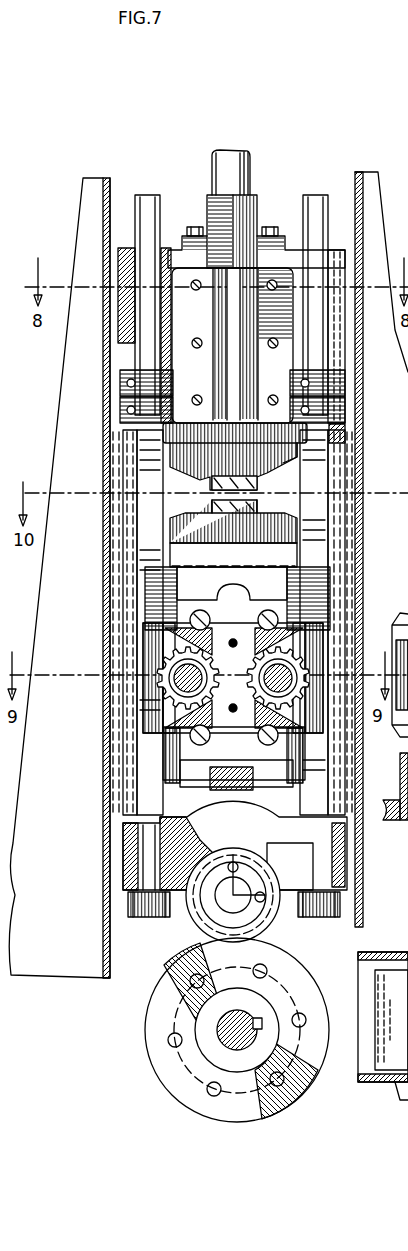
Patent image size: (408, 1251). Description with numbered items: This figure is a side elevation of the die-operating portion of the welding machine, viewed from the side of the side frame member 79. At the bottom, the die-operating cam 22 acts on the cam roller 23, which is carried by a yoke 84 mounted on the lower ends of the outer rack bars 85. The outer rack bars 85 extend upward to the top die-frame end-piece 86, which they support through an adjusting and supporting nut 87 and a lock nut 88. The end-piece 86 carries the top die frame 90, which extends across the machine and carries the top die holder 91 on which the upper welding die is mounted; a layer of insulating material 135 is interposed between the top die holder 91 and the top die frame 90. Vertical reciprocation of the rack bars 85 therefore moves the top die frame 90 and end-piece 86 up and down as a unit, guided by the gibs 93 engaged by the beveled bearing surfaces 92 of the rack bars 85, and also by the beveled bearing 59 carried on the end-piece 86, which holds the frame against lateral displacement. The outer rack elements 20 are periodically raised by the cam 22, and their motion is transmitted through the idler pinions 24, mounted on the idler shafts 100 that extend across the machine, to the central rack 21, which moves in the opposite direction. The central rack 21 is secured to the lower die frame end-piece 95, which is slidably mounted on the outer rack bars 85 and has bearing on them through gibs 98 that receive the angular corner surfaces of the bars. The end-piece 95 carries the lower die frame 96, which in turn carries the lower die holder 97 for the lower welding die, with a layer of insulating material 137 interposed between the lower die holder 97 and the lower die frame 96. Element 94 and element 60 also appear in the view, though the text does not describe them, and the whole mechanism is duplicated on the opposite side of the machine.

The side frame member 79 is at (381, 233).
The top die-frame end-piece 86 is at (293, 253).
The beveled bearing 59 is at (217, 353).
The adjusting and supporting nut 87 is at (118, 378).
The lock nut 88 is at (118, 407).
The top die frame 90 is at (183, 432).
The guide strip 94 is at (362, 390).
The top die holder 91 is at (182, 453).
The outer rack bar 85 is at (317, 490).
The gib 93 is at (348, 460).
The lower die holder 97 is at (182, 533).
The lower die frame 96 is at (177, 557).
The layer of insulating material 135 is at (333, 428).
The beveled bearing surface 92 is at (300, 448).
The layer of insulating material 137 is at (287, 543).
The gib 98 is at (293, 577).
The outer rack element 20 is at (320, 625).
The idler pinion 24 is at (310, 670).
The idler shaft 100 is at (313, 695).
The central rack 21 is at (220, 700).
The lower die frame end-piece 95 is at (207, 767).
The cam roller 23 is at (200, 923).
The yoke 84 is at (357, 927).
The hub 60 is at (220, 1023).
The die-operating cam 22 is at (217, 1044).